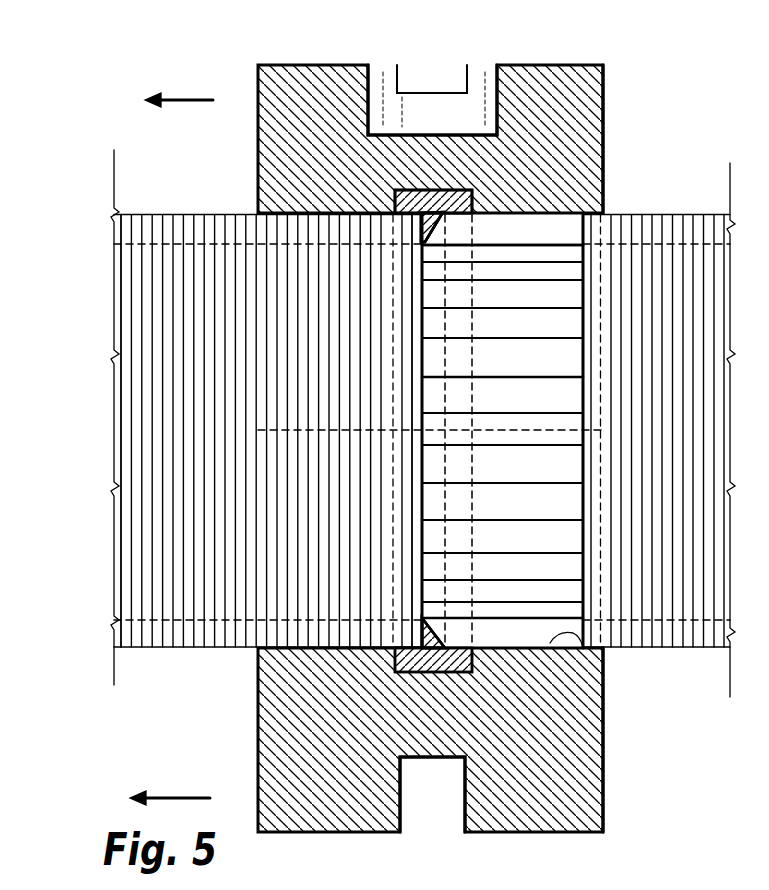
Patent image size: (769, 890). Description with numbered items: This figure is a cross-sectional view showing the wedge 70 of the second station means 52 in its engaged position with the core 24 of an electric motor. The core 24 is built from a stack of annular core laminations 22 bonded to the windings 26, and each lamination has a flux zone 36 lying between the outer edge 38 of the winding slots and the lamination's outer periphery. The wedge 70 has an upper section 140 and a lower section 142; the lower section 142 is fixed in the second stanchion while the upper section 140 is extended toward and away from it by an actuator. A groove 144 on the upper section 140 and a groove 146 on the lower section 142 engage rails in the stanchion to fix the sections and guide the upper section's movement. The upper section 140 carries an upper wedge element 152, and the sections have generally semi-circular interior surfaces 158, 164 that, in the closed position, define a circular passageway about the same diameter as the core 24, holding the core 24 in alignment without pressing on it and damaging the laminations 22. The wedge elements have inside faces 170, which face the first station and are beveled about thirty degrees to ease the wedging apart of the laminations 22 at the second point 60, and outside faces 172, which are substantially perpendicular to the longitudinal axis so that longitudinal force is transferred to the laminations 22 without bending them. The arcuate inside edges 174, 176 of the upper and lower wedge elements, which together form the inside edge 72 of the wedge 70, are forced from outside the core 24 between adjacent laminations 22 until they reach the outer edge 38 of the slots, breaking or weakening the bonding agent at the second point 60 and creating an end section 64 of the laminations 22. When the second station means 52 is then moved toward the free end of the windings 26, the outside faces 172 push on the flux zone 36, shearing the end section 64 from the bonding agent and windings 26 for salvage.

The core laminations 22 is at (697, 222).
The core 24 is at (203, 214).
The windings 26 is at (530, 408).
The flux zone 36 is at (118, 235).
The outer edge of the slots 38 is at (628, 242).
The second station means 52 is at (632, 76).
The second point 60 is at (602, 165).
The end section 64 is at (266, 431).
The wedge 70 is at (417, 190).
The inside edge of the wedge 72 is at (427, 242).
The upper section of the wedge 140 is at (537, 97).
The lower section of the wedge 142 is at (572, 833).
The groove of the upper section 144 is at (397, 72).
The groove of the lower section 146 is at (463, 798).
The upper wedge element 152 is at (433, 201).
The interior surface of the upper wedge section 158 is at (545, 224).
The interior surface of the lower wedge section 164 is at (602, 686).
The inside faces of the wedge elements 170 is at (443, 222).
The outside faces of the wedge elements 172 is at (397, 200).
The arcuate inside edge of the upper wedge element 174 is at (432, 227).
The arcuate inside edge of the lower wedge element 176 is at (433, 633).